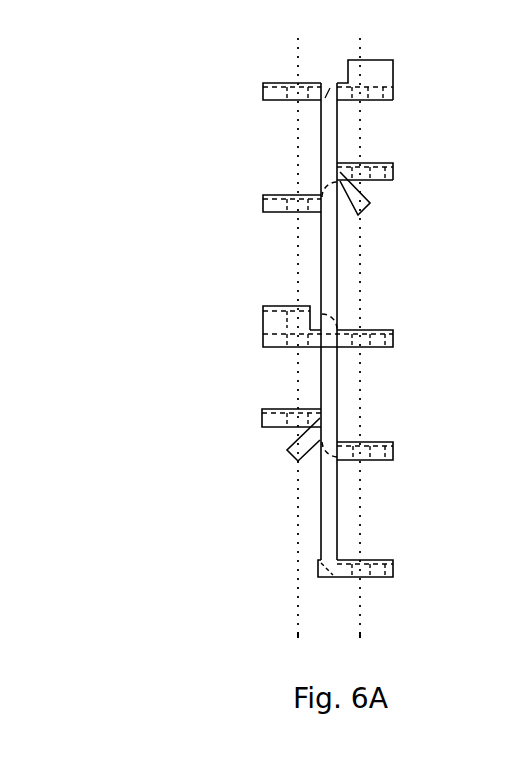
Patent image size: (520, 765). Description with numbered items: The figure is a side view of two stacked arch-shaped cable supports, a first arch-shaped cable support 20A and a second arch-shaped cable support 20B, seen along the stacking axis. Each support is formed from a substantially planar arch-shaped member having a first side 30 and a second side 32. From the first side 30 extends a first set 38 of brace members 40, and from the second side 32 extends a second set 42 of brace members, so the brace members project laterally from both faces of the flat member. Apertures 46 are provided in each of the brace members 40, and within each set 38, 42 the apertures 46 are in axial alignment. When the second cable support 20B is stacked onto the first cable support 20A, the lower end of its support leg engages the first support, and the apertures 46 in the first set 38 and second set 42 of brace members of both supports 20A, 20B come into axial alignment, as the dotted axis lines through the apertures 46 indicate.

The first arch-shaped cable support 20A is at (168, 415).
The second arch-shaped cable support 20B is at (162, 142).
The first side 30 is at (338, 267).
The second side 32 is at (321, 167).
The first set of brace members 38 is at (395, 173).
The brace members 40 is at (385, 101).
The second set of brace members 42 is at (265, 86).
The apertures 46 is at (268, 101).